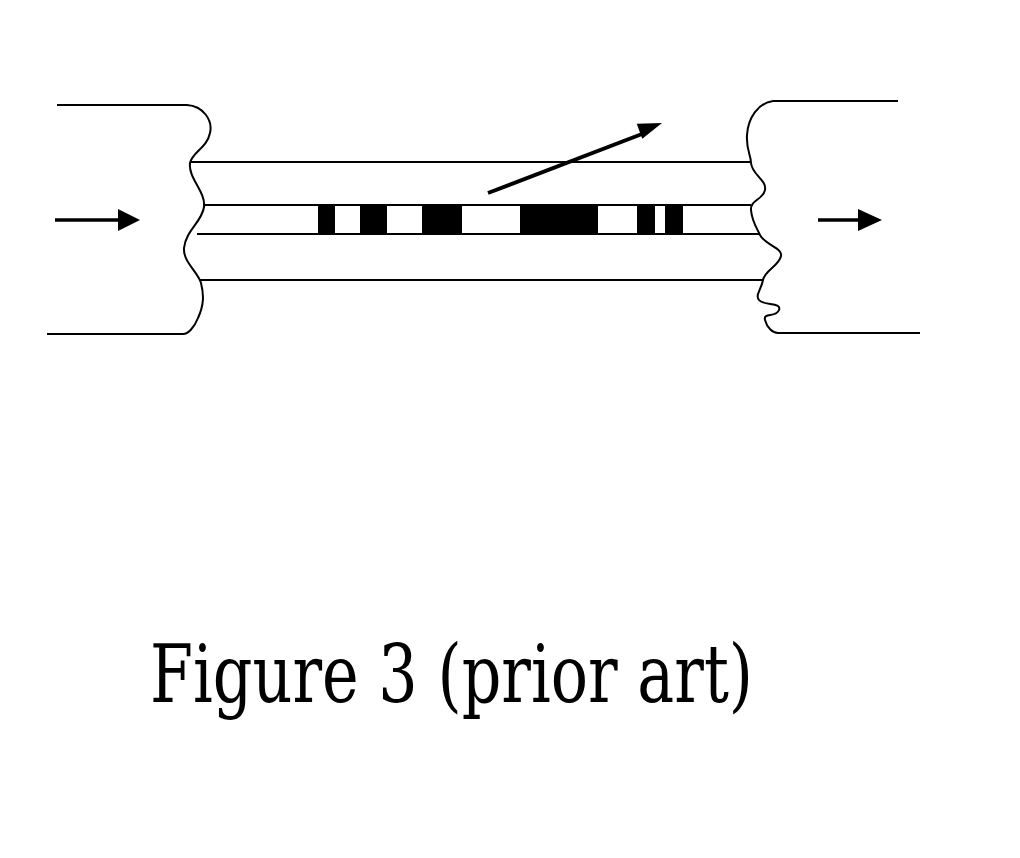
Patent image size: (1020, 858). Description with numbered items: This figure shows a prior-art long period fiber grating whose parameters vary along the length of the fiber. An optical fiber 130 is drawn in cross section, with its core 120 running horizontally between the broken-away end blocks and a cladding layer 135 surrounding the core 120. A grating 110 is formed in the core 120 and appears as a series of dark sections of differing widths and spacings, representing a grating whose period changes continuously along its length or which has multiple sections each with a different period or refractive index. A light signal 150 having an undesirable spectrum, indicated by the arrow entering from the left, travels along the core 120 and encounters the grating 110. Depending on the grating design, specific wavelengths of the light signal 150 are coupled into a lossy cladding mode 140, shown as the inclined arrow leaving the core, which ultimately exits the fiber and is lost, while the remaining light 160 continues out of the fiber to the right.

The grating 110 is at (518, 218).
The core 120 is at (237, 217).
The optical fiber 130 is at (138, 123).
The cladding layer 135 is at (345, 182).
The lossy cladding mode 140 is at (622, 145).
The light signal 150 is at (72, 222).
The output light 160 is at (843, 223).